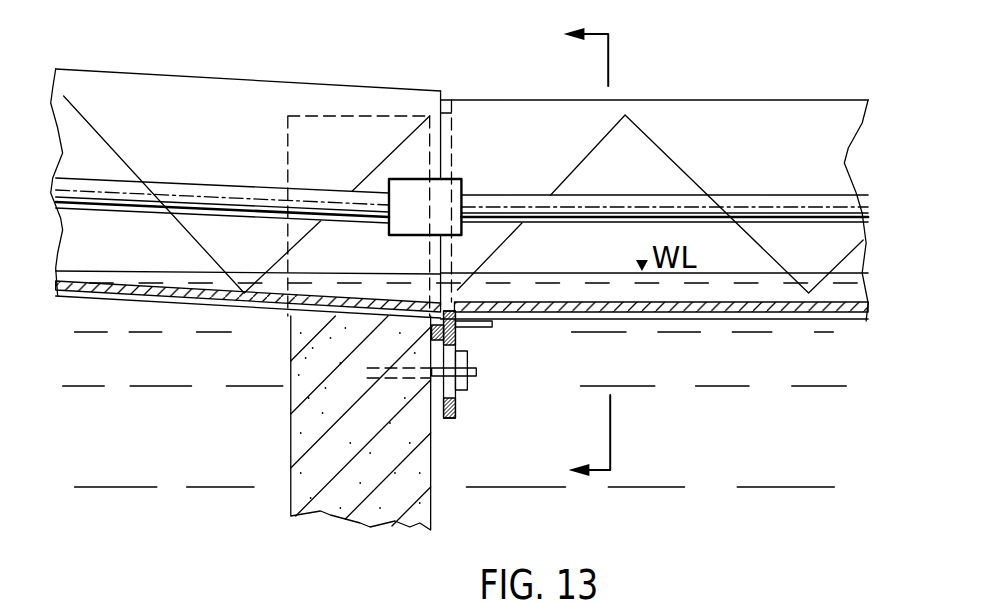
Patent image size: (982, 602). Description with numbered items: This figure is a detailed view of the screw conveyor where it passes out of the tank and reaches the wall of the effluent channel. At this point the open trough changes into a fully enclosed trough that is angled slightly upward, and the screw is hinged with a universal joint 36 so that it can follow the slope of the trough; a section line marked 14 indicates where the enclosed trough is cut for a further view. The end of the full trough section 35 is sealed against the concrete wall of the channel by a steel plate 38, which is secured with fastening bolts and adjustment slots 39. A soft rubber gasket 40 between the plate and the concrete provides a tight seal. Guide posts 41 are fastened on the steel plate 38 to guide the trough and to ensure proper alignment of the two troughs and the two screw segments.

The section line 14- 14 is at (610, 252).
The full trough section 35 is at (230, 303).
The universal joint 36 is at (461, 176).
The steel plate 38 is at (458, 405).
The fastening bolts and adjustment slots 39 is at (468, 377).
The soft rubber gasket 40 is at (437, 326).
The guide posts 41 is at (492, 323).